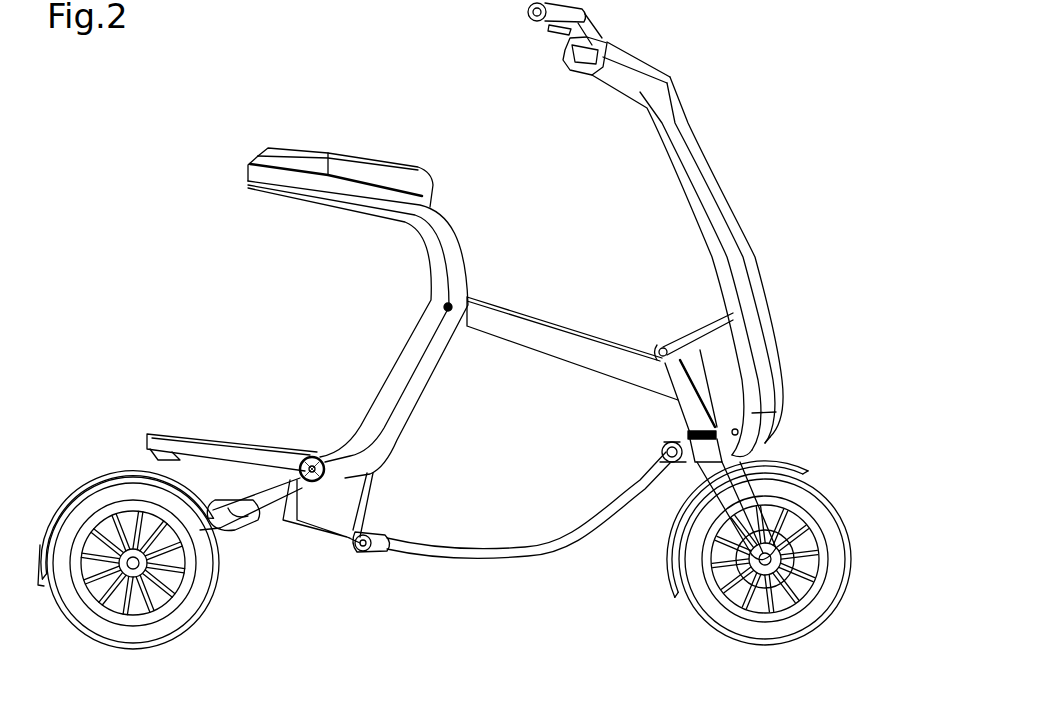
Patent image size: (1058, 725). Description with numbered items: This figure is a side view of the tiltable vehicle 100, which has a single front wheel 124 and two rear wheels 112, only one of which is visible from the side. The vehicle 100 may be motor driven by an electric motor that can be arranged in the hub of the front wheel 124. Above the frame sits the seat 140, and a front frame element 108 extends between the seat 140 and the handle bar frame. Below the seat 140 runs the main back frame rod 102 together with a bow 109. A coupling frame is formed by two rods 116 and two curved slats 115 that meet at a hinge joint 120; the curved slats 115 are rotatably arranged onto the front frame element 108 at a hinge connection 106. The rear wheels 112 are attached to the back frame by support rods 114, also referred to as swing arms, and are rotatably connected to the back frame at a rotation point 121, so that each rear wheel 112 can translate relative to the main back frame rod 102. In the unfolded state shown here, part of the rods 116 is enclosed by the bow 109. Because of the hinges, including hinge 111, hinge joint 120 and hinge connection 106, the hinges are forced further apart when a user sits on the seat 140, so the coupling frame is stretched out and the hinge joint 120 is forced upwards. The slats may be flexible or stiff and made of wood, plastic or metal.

The tiltable vehicle 100 is at (810, 92).
The main back frame rod 102 is at (413, 337).
The hinge connection 106 is at (661, 452).
The front frame element 108 is at (553, 327).
The bow 109 is at (220, 438).
The hinge 111 is at (450, 309).
The rear wheels 112 is at (221, 609).
The support rods 114 is at (272, 505).
The curved slats 115 is at (556, 547).
The rods 116 is at (345, 550).
The hinge joint 120 is at (367, 530).
The rotation point 121 is at (317, 457).
The front wheel 124 is at (846, 484).
The seat 140 is at (385, 168).